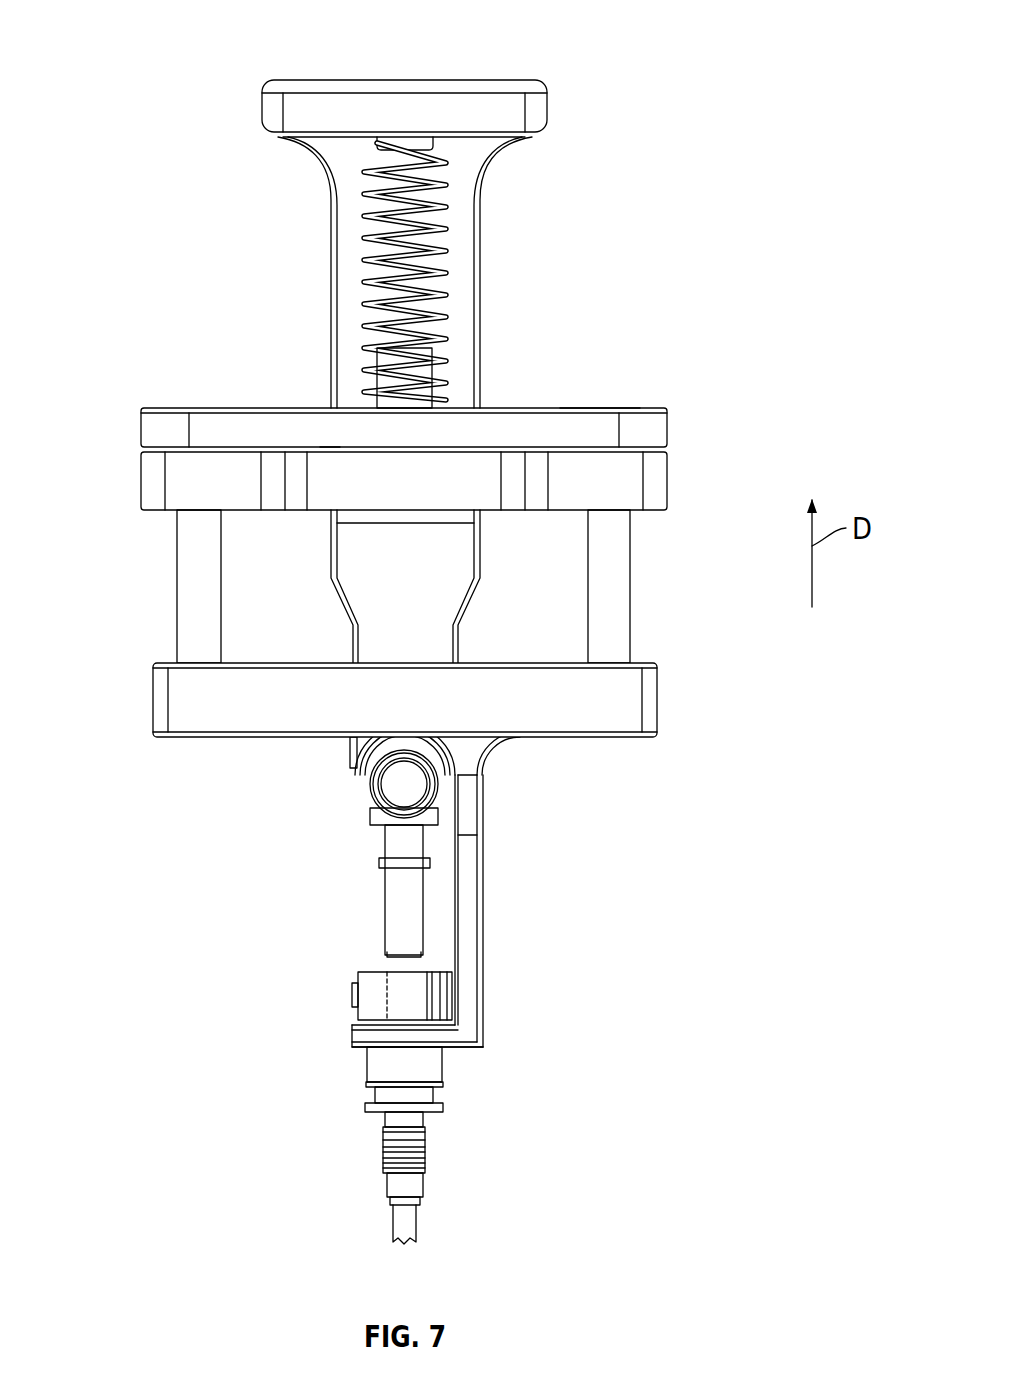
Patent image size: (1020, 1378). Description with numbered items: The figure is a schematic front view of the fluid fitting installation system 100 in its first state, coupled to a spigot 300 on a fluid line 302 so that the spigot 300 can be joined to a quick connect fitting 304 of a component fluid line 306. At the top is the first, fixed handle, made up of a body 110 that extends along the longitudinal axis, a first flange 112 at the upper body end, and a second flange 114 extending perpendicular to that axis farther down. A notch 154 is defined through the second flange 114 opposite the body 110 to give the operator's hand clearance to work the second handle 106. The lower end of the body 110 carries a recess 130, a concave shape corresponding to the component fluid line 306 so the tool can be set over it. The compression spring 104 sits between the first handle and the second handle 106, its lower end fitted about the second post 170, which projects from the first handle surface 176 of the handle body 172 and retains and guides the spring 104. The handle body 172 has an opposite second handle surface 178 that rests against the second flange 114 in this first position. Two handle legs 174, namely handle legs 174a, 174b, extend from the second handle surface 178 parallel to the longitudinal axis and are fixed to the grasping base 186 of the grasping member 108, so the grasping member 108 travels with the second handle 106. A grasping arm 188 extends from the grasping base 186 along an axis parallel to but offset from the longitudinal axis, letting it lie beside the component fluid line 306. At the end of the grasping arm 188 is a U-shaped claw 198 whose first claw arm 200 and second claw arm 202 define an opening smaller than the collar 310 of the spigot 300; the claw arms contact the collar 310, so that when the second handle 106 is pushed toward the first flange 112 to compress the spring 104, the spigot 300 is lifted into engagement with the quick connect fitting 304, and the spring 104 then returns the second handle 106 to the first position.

The fluid fitting installation system 100 is at (665, 42).
The spring 104 is at (447, 228).
The second handle 106 is at (674, 421).
The grasping member 108 is at (601, 844).
The body 110 is at (489, 297).
The first flange 112 is at (427, 74).
The second flange 114 is at (674, 476).
The recess 130 is at (365, 751).
The notch 154 is at (470, 483).
The second post 170 is at (420, 365).
The handle body 172 is at (157, 394).
The handle leg 174 is at (641, 630).
The handle leg 174a is at (190, 612).
The handle leg 174b is at (620, 551).
The first handle surface 176 is at (598, 406).
The second handle surface 178 is at (330, 450).
The grasping base 186 is at (665, 691).
The grasping arm 188 is at (489, 927).
The claw 198 is at (467, 1065).
The first claw arm 200 is at (352, 1030).
The second claw arm 202 is at (462, 1033).
The spigot 300 is at (425, 1152).
The fluid line 302 is at (413, 1225).
The quick connect fitting 304 is at (385, 915).
The component fluid line 306 is at (373, 790).
The collar 310 is at (355, 985).